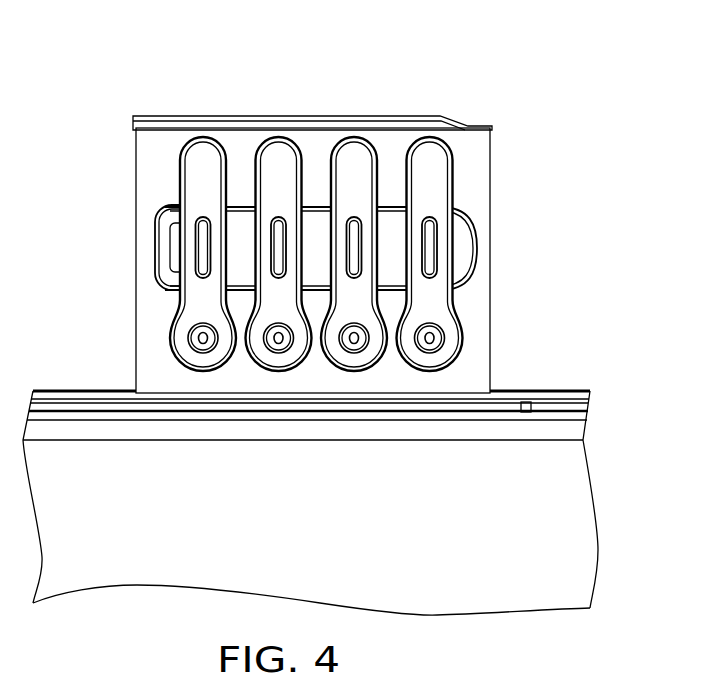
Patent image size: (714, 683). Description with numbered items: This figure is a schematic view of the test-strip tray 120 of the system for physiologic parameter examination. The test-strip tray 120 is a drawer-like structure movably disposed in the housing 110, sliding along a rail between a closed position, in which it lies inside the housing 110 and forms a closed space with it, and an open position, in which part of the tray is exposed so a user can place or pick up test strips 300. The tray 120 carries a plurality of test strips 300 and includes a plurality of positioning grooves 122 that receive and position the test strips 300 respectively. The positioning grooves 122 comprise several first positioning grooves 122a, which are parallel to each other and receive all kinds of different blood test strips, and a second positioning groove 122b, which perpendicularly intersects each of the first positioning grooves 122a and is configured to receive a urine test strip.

The housing 110 is at (562, 505).
The test-strip tray 120 is at (473, 182).
The positioning grooves 122 is at (282, 153).
The first positioning grooves 122a is at (186, 171).
The second positioning groove 122b is at (165, 247).
The test strip 300 is at (208, 180).